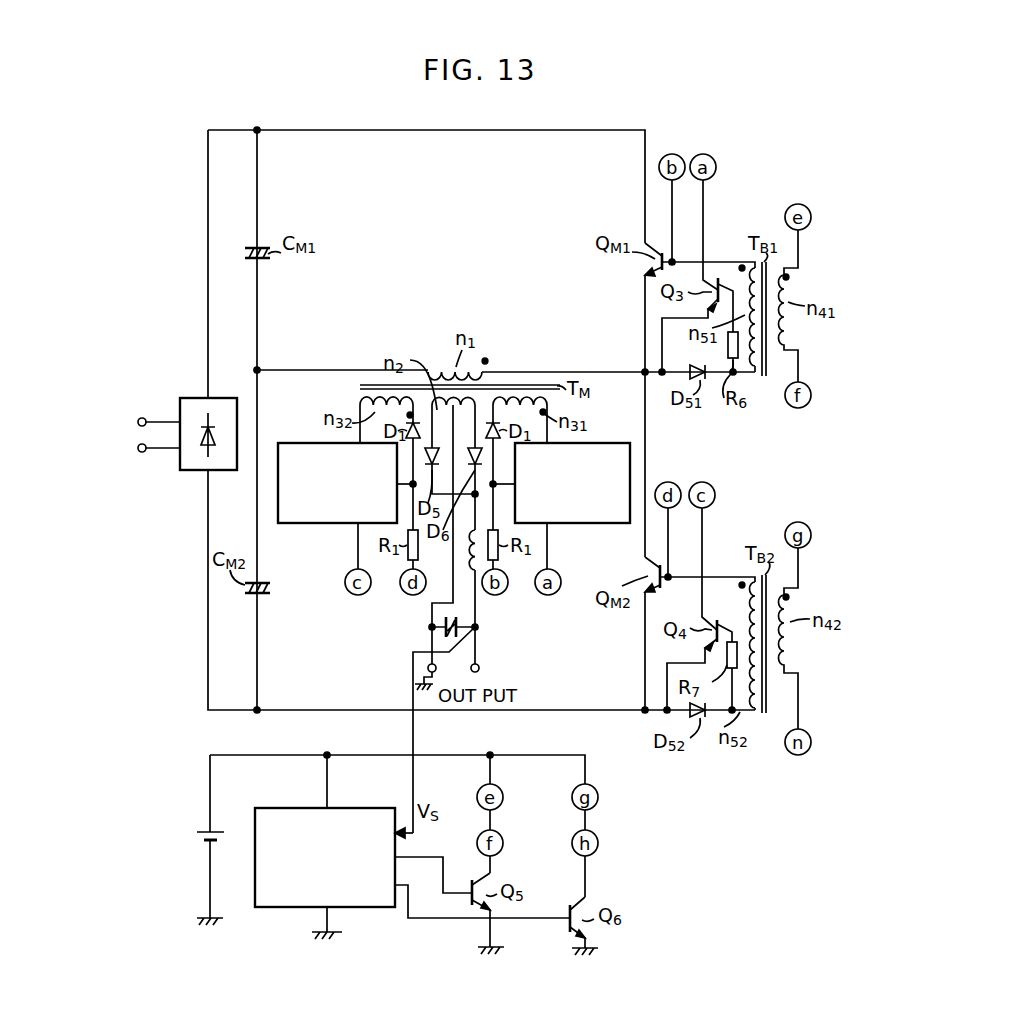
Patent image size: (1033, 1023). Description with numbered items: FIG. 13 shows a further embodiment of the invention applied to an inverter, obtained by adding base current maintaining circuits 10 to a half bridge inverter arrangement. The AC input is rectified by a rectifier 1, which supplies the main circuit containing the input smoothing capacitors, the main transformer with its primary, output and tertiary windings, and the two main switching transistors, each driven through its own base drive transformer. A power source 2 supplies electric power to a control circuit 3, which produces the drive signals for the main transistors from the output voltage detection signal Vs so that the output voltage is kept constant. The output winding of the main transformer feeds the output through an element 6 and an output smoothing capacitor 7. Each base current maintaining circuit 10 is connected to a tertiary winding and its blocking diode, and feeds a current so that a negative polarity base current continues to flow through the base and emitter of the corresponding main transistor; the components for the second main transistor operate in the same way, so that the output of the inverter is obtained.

The rectifier 1 is at (195, 397).
The power source 2 is at (203, 829).
The control circuit 3 is at (285, 908).
The inductor coil 6 is at (470, 548).
The output smoothing capacitor 7 is at (445, 620).
The base current maintaining circuit 10 is at (310, 526).